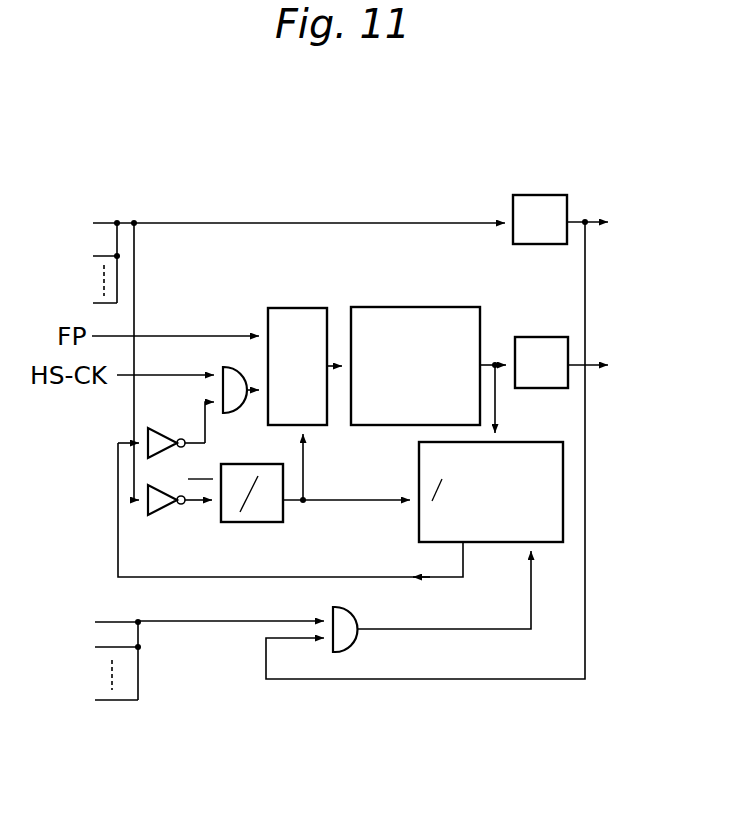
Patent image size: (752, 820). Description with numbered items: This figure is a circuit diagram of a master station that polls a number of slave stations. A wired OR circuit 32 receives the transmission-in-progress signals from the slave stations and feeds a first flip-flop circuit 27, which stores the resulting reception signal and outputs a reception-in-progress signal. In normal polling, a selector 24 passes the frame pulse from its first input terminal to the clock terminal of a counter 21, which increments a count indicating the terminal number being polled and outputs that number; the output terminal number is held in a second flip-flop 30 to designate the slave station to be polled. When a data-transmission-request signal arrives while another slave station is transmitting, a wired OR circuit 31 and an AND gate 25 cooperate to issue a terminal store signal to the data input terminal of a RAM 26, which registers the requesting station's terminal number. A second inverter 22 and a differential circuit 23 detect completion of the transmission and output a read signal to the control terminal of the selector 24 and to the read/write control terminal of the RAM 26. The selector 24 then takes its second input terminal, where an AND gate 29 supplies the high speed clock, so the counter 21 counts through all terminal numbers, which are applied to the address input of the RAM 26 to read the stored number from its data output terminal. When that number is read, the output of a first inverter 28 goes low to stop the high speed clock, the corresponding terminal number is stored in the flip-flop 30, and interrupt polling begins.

The counter 21 is at (410, 307).
The second inverter 22 is at (146, 505).
The differential circuit 23 is at (245, 523).
The selector 24 is at (297, 308).
The AND gate 25 is at (358, 640).
The RAM 26 is at (419, 534).
The first flip-flop circuit 27 is at (540, 195).
The first inverter 28 is at (146, 437).
The AND gate 29 is at (230, 365).
The second flip-flop 30 is at (541, 337).
The wired OR circuit 31 is at (138, 618).
The wired OR circuit 32 is at (117, 216).